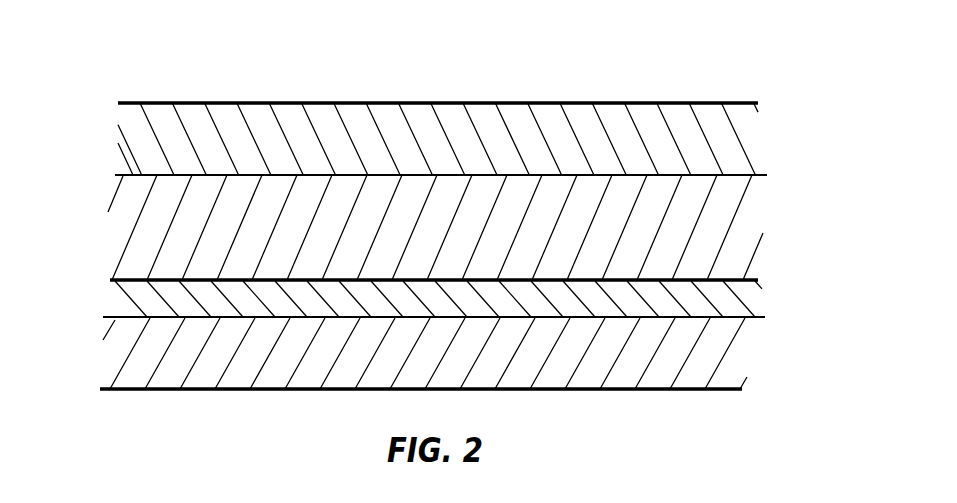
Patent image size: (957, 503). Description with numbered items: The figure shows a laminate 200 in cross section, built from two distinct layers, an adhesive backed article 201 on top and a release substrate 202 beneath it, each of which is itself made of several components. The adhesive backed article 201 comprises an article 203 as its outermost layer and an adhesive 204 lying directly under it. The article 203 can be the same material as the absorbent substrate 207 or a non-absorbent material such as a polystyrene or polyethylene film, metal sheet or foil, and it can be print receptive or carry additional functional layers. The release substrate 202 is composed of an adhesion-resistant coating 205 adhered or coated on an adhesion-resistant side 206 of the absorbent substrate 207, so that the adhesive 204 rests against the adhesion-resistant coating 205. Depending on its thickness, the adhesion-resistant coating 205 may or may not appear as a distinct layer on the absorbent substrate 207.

The laminate 200 is at (560, 75).
The adhesive backed article 201 is at (100, 103).
The release substrate 202 is at (100, 287).
The article 203 is at (760, 132).
The adhesive 204 is at (755, 217).
The adhesion-resistant coating 205 is at (755, 298).
The adhesion-resistant side 206 is at (768, 322).
The absorbent substrate 207 is at (745, 357).